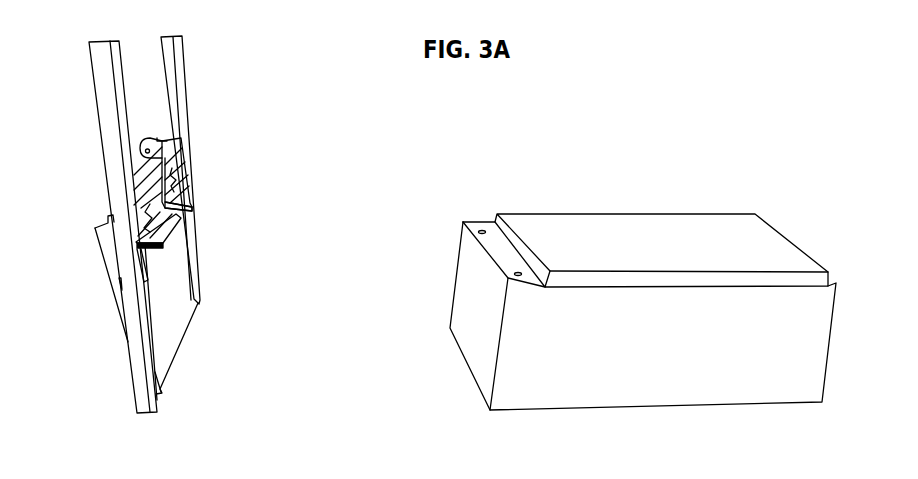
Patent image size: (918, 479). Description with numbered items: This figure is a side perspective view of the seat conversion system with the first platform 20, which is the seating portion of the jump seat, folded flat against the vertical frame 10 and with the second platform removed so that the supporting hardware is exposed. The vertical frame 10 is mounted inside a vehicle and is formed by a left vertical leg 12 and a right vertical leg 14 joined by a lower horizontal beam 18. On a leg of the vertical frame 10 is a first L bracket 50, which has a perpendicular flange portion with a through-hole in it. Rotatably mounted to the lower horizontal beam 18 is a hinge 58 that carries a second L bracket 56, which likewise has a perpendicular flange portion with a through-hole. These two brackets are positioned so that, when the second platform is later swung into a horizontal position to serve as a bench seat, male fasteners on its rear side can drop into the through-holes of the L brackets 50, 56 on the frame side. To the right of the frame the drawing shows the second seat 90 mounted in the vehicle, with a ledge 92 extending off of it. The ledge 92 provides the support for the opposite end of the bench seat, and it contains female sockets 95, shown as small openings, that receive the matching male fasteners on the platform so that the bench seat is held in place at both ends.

The first vertical frame 10 is at (201, 51).
The left vertical leg 12 is at (105, 83).
The right vertical leg 14 is at (182, 97).
The lower horizontal beam 18 is at (183, 150).
The first platform 20 is at (185, 355).
The first L bracket 50 is at (153, 250).
The second L bracket 56 is at (178, 202).
The hinge for second L bracket 58 is at (143, 153).
The second seat 90 is at (693, 388).
The ledge 92 is at (497, 250).
The sockets 95 is at (483, 230).